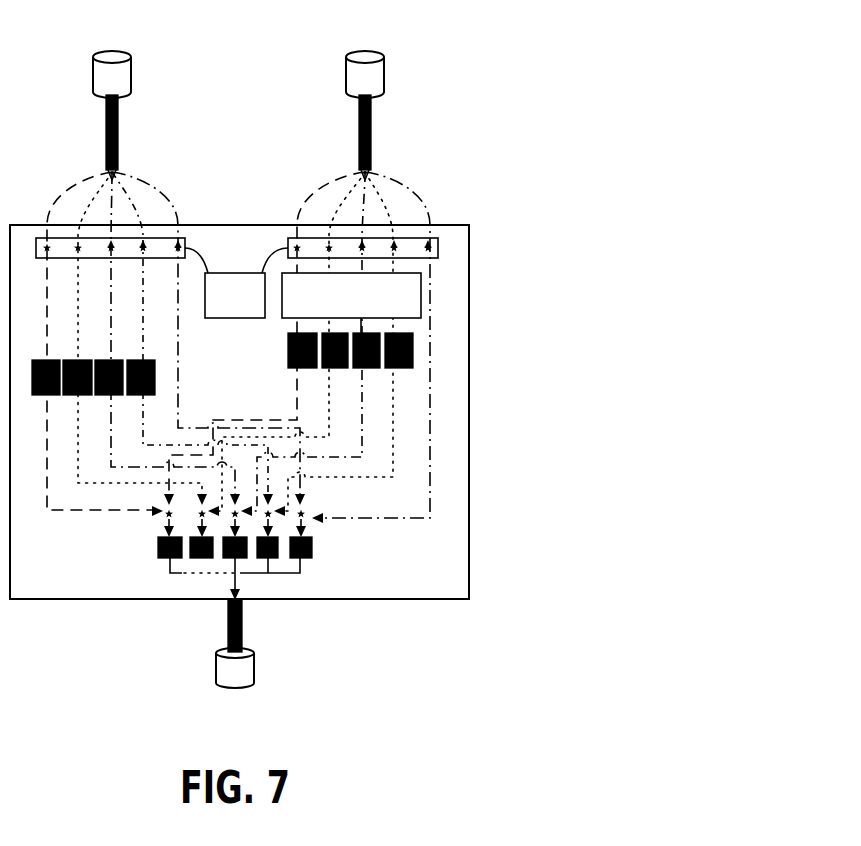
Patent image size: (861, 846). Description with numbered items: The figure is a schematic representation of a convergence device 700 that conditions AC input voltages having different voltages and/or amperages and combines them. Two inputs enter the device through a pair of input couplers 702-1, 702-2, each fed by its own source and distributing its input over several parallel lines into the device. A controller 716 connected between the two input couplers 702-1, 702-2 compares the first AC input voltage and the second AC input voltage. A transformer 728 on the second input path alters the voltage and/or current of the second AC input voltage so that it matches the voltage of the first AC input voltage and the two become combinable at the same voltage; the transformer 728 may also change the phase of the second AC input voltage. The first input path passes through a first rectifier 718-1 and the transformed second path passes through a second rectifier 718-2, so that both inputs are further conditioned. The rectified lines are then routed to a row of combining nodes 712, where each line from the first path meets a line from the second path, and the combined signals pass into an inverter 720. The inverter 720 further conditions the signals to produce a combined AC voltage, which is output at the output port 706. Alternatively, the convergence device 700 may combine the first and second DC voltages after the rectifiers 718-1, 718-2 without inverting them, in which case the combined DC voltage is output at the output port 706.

The convergence device 700 is at (456, 47).
The first input coupler 702-1 is at (185, 240).
The second input coupler 702-2 is at (437, 239).
The controller 716 is at (237, 295).
The transformer 728 is at (351, 295).
The rectifier 718-1 is at (155, 373).
The rectifier 718-2 is at (413, 349).
The combiners 712 is at (146, 522).
The inverter 720 is at (313, 546).
The output port 706 is at (243, 604).